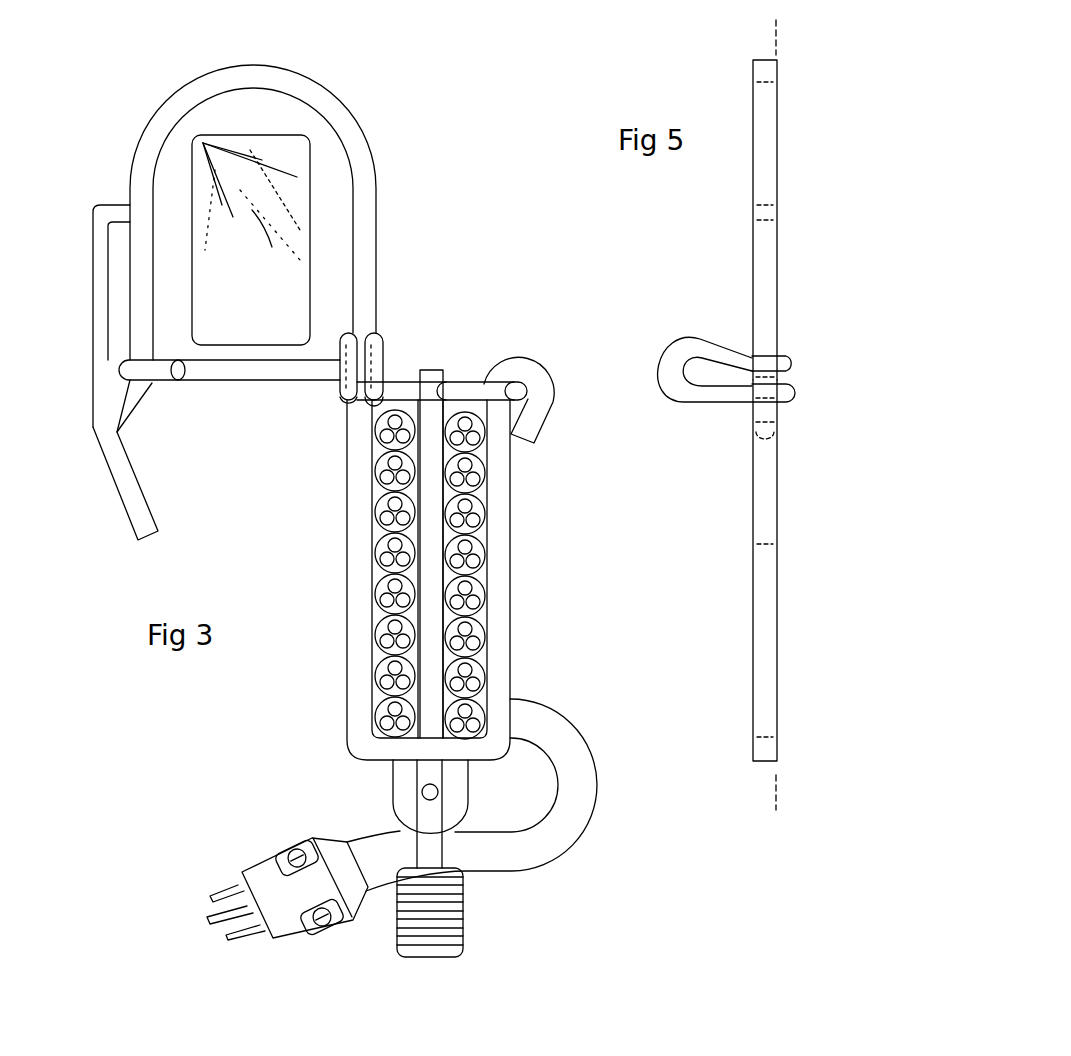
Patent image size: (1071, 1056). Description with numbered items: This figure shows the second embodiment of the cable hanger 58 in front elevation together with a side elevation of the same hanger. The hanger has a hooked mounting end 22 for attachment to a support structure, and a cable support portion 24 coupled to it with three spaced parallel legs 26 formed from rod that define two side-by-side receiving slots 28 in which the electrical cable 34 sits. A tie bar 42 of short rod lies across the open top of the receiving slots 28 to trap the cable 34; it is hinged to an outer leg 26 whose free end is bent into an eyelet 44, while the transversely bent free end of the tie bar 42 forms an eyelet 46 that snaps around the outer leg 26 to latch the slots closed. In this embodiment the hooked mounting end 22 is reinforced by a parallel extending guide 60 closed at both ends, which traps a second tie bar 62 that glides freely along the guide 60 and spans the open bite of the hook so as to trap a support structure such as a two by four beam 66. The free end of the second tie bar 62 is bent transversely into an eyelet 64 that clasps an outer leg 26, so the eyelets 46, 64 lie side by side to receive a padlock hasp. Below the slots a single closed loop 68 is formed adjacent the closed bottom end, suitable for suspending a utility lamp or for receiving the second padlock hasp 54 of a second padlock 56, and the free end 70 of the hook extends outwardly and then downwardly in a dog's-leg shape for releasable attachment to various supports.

In FIG. 3, the mounting end 22 is at (157, 268).
In FIG. 5, the mounting end 22 is at (778, 178).
In FIG. 3, the cable support portion 24 is at (428, 368).
In FIG. 3, the legs 26 is at (347, 510).
In FIG. 5, the legs 26 is at (770, 512).
In FIG. 3, the receiving slots 28 is at (480, 613).
In FIG. 3, the electrical cable 34 is at (480, 653).
In FIG. 3, the tie bar 42 is at (462, 383).
In FIG. 3, the eyelet 44 is at (548, 378).
In FIG. 3, the eyelet 46 is at (340, 394).
In FIG. 5, the eyelet 46 is at (740, 404).
In FIG. 3, the second padlock hasp 54 is at (437, 845).
In FIG. 3, the second padlock 56 is at (463, 925).
In FIG. 3, the cable hanger 58 is at (150, 78).
In FIG. 5, the cable hanger 58 is at (722, 280).
In FIG. 3, the guide 60 is at (93, 317).
In FIG. 3, the second tie bar 62 is at (213, 356).
In FIG. 3, the eyelet 64 is at (383, 368).
In FIG. 5, the eyelet 64 is at (680, 399).
In FIG. 3, the two by four beam 66 is at (215, 135).
In FIG. 3, the single closed loop 68 is at (393, 805).
In FIG. 3, the free end 70 is at (123, 498).